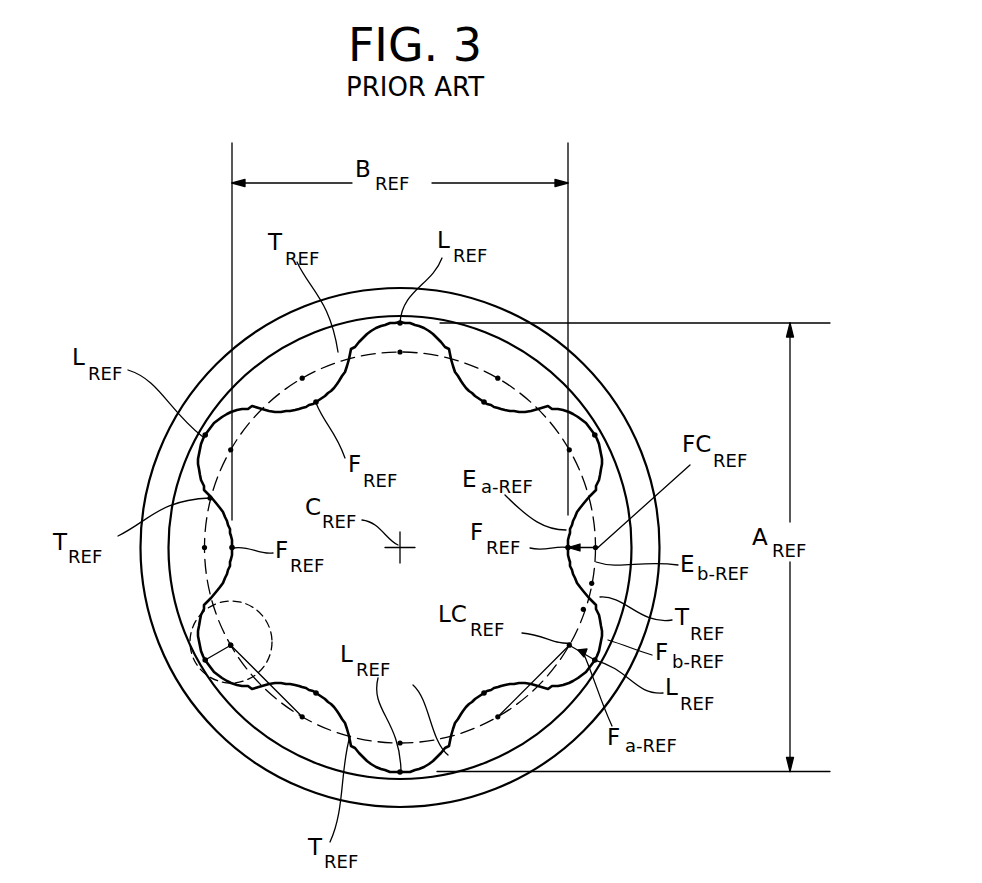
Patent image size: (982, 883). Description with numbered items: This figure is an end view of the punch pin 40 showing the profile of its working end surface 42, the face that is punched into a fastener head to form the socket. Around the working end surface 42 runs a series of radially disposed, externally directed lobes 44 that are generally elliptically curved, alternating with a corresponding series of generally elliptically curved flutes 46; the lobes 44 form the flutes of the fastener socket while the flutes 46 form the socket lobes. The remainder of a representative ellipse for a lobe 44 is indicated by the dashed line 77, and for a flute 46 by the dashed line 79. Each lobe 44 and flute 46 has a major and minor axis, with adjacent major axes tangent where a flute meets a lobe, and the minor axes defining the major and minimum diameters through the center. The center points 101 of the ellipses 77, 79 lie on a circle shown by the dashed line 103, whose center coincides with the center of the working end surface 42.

The punch pin 40 is at (503, 305).
The working end surface 42 is at (448, 752).
The lobes 44 is at (210, 673).
The flutes 46 is at (253, 680).
The dashed line (ellipse of lobe) 77 is at (258, 630).
The dashed line (ellipse of flute) 79 is at (238, 726).
The center points 101 is at (302, 378).
The circle (dashed line) 103 is at (371, 356).